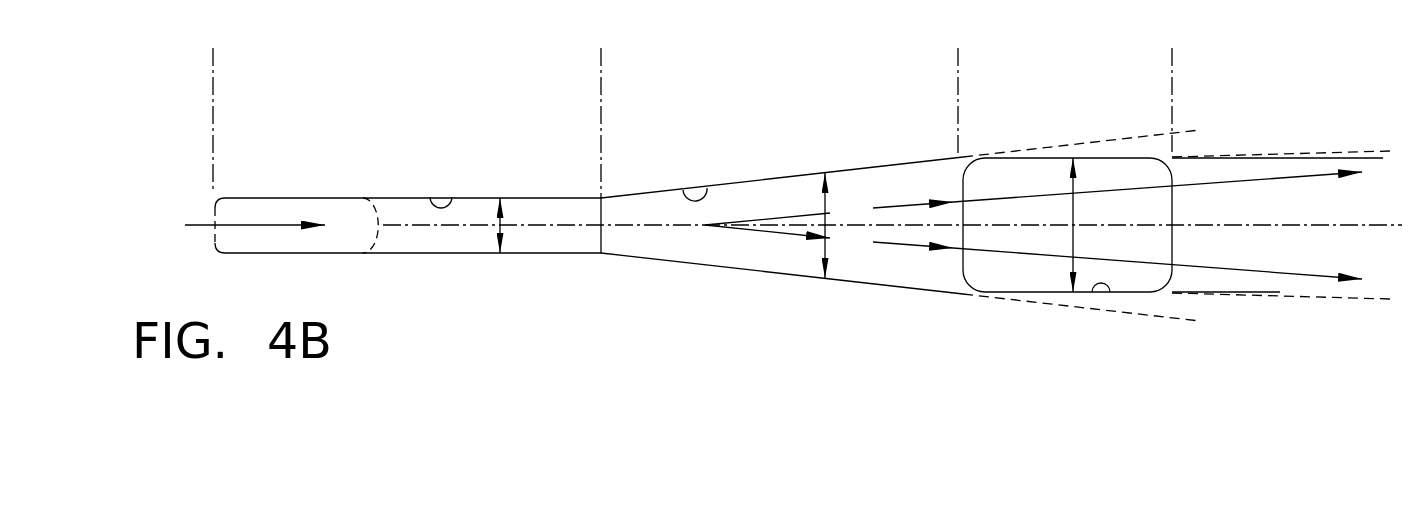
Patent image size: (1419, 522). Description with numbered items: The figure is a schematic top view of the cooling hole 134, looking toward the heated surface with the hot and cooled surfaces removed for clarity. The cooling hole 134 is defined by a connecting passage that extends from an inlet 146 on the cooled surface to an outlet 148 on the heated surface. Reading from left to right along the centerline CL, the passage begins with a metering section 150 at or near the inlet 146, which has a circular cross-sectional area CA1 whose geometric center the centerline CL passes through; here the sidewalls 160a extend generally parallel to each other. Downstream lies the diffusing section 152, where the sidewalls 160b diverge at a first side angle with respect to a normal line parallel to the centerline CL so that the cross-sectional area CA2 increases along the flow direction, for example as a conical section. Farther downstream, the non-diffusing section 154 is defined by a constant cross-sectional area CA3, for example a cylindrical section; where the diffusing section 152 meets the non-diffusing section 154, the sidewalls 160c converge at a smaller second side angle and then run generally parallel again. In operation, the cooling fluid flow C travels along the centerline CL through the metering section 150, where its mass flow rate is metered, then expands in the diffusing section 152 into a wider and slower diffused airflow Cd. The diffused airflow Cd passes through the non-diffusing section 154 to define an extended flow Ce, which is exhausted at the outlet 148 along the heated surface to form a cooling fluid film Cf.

The metering section 150 is at (601, 68).
The diffusing section 152 is at (958, 68).
The non-diffusing section 154 is at (1172, 68).
The inlet 146 is at (250, 210).
The cooling hole 134 is at (625, 210).
The outlet 148 is at (993, 243).
The sidewalls 160a is at (430, 197).
The sidewalls 160b is at (707, 188).
The sidewalls 160c is at (1110, 292).
The cooling fluid flow C is at (200, 222).
The cross-sectional area CA1 is at (502, 227).
The increasing cross-sectional area CA2 is at (828, 255).
The constant cross-sectional area CA3 is at (1118, 172).
The centerline CL is at (640, 222).
The diffused airflow Cd is at (753, 232).
The extended flow Ce is at (935, 200).
The cooling fluid film Cf is at (1202, 268).